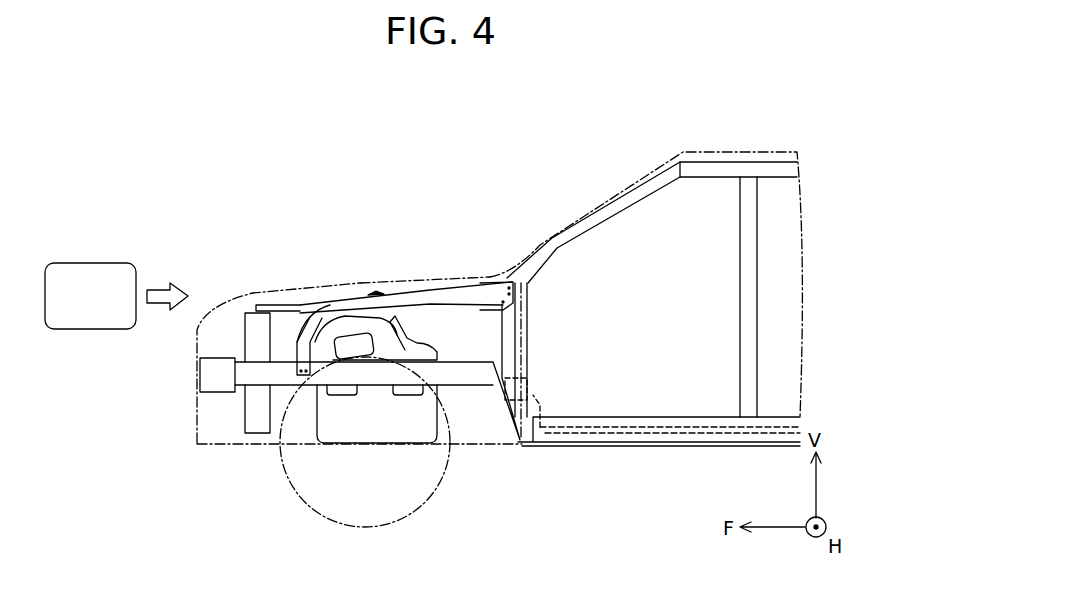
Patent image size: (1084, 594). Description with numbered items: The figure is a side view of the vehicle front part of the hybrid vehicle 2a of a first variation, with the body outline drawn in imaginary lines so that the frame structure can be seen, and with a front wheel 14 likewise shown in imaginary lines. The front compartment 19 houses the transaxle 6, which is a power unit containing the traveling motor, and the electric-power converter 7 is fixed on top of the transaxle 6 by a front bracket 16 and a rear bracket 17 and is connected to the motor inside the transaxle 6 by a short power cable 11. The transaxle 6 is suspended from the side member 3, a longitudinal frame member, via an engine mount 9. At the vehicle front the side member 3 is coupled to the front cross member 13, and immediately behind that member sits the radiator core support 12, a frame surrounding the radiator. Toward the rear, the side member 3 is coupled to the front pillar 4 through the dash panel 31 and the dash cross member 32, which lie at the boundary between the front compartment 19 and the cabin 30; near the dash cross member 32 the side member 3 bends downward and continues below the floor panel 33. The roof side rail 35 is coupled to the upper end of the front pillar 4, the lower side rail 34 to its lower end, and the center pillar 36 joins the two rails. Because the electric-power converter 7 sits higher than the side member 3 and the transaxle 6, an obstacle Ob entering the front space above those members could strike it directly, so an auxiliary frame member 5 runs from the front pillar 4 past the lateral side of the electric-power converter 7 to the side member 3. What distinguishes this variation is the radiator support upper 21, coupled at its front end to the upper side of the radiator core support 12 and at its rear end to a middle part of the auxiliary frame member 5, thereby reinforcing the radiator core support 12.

The hybrid vehicle 2a is at (168, 203).
The obstacle Ob is at (97, 262).
The side member 3 is at (262, 325).
The front pillar 4 is at (483, 297).
The auxiliary frame member 5 is at (458, 298).
The transaxle 6 is at (328, 430).
The electric-power converter 7 is at (342, 324).
The engine mount 9 is at (343, 398).
The power cable 11 is at (360, 340).
The radiator core support 12 is at (250, 337).
The front cross member 13 is at (210, 378).
The front wheel 14 is at (438, 497).
The front bracket 16 is at (311, 335).
The rear bracket 17 is at (403, 335).
The front compartment 19 is at (417, 320).
The radiator support upper 21 is at (278, 305).
The cabin 30 is at (633, 251).
The dash panel 31 is at (530, 323).
The dash cross member 32 is at (545, 400).
The floor panel 33 is at (617, 438).
The lower side rail 34 is at (707, 420).
The roof side rail 35 is at (698, 170).
The center pillar 36 is at (747, 218).